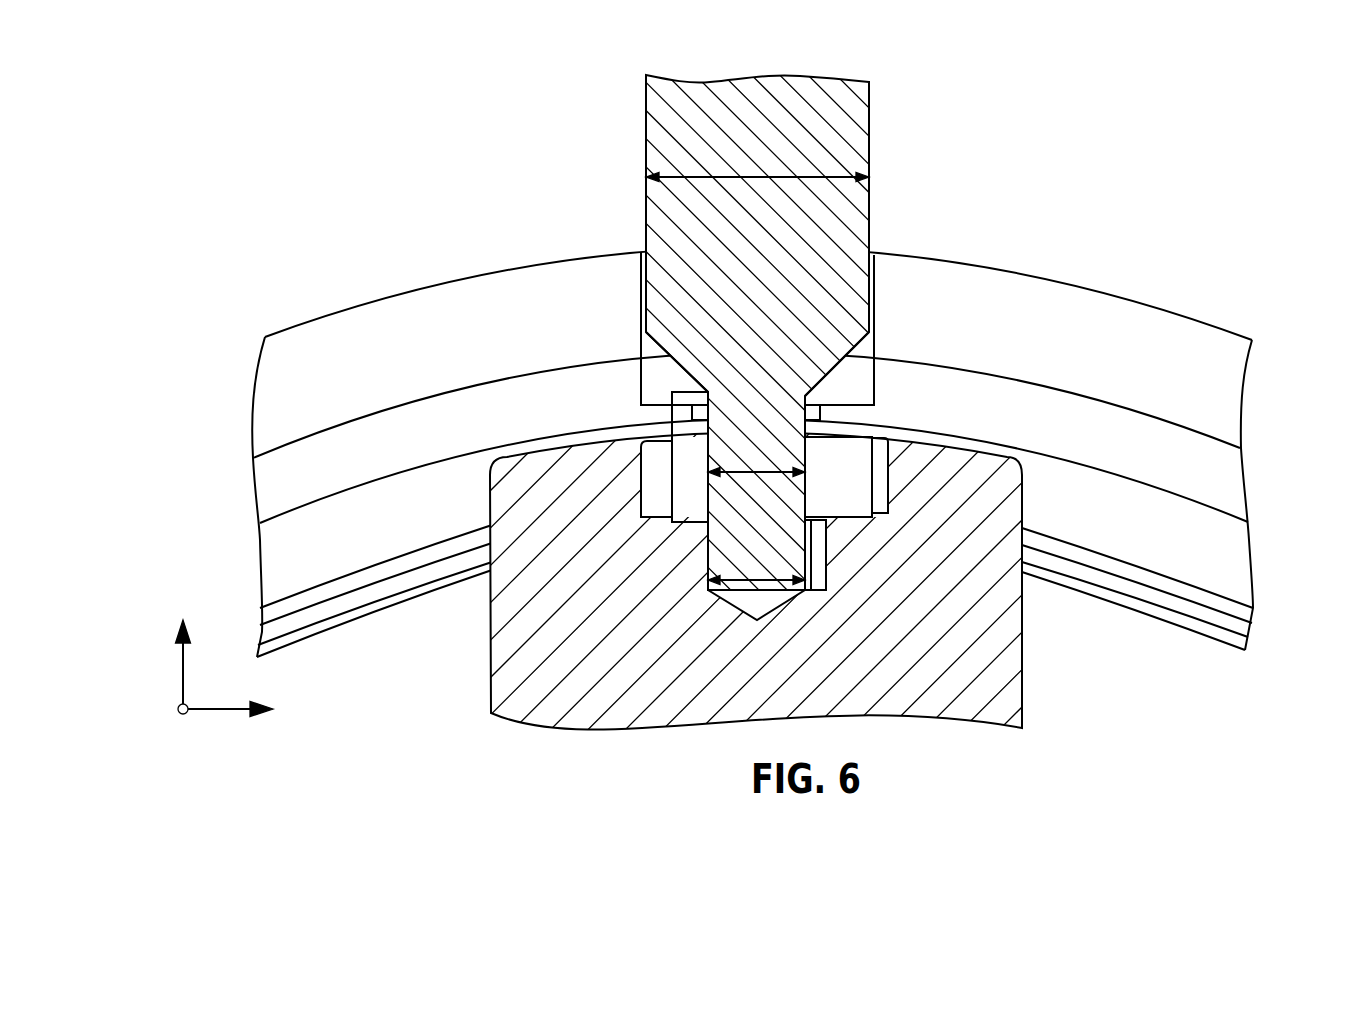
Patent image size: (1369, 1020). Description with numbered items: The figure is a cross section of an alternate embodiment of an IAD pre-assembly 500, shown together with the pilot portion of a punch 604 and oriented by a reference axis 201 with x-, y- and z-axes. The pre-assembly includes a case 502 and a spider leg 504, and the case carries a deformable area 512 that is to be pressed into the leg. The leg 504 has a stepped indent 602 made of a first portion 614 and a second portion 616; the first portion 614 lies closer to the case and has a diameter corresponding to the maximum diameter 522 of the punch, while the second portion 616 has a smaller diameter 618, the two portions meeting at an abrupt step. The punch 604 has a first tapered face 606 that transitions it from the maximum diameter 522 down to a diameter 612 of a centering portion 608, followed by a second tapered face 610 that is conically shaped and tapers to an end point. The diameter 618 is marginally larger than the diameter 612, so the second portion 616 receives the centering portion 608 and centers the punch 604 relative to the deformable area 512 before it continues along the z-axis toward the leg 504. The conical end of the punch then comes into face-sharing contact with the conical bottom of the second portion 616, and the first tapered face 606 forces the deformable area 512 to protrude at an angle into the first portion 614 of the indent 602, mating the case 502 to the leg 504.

The IAD pre-assembly 500 is at (263, 179).
The reference axis 201 is at (139, 664).
The case 502 is at (1245, 410).
The leg 504 is at (1023, 634).
The deformable area 512 is at (854, 388).
The maximum diameter 522 is at (860, 176).
The stepped indent 602 is at (662, 506).
The punch 604 is at (870, 112).
The first tapered face 606 is at (840, 360).
The centering portion 608 is at (672, 466).
The second tapered face 610 is at (727, 546).
The diameter of centering portion 612 is at (781, 470).
The first portion 614 is at (888, 484).
The second portion 616 is at (826, 558).
The diameter of second portion 618 is at (712, 580).